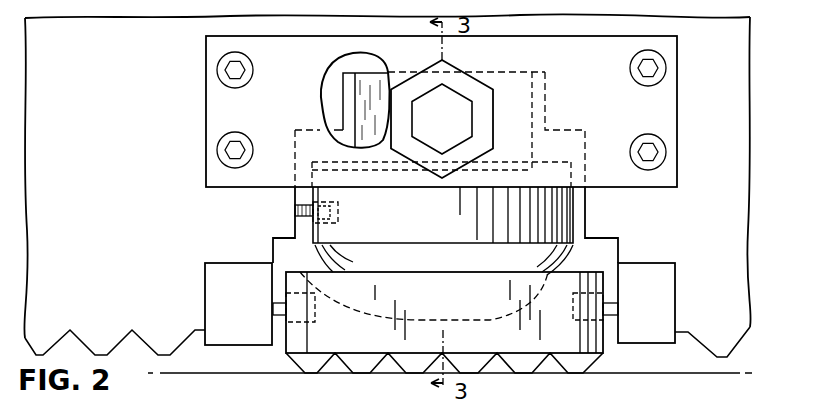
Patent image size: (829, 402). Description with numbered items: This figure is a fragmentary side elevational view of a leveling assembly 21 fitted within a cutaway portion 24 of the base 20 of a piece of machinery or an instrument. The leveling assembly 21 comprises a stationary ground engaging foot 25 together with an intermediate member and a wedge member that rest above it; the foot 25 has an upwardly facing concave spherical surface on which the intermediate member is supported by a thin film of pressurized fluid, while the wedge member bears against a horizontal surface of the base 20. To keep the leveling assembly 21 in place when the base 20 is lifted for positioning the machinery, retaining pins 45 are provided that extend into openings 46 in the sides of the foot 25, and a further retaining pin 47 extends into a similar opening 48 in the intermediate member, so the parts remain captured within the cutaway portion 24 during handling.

The base 20 is at (737, 144).
The leveling assembly 21 is at (184, 167).
The cutaway portion 24 is at (605, 237).
The ground engaging foot 25 is at (567, 347).
The retaining pins 45 is at (284, 305).
The openings 46 is at (308, 275).
The retaining pin 47 is at (295, 212).
The opening 48 is at (340, 203).